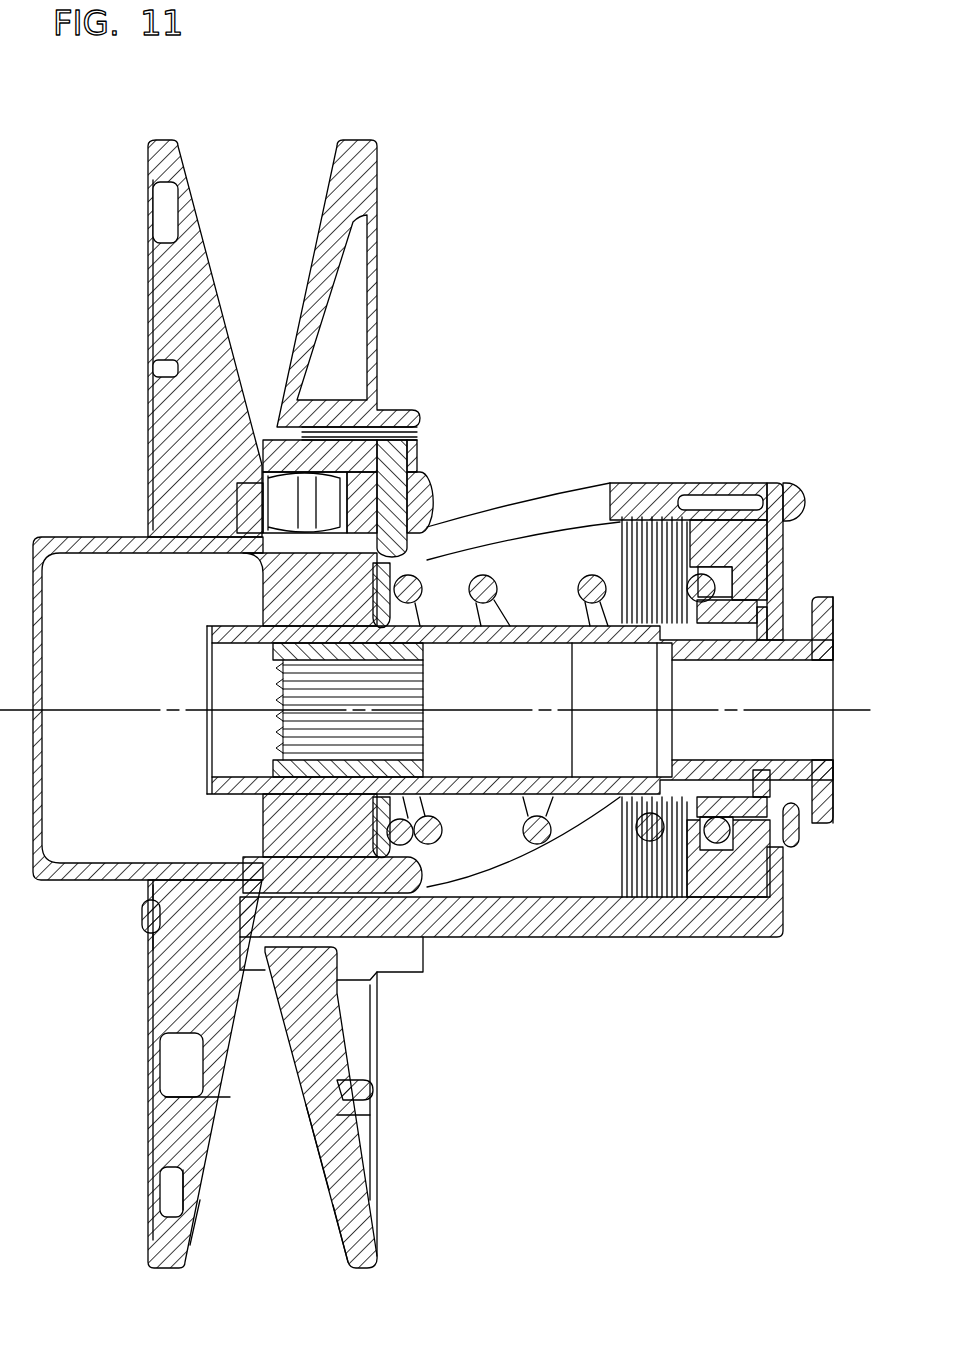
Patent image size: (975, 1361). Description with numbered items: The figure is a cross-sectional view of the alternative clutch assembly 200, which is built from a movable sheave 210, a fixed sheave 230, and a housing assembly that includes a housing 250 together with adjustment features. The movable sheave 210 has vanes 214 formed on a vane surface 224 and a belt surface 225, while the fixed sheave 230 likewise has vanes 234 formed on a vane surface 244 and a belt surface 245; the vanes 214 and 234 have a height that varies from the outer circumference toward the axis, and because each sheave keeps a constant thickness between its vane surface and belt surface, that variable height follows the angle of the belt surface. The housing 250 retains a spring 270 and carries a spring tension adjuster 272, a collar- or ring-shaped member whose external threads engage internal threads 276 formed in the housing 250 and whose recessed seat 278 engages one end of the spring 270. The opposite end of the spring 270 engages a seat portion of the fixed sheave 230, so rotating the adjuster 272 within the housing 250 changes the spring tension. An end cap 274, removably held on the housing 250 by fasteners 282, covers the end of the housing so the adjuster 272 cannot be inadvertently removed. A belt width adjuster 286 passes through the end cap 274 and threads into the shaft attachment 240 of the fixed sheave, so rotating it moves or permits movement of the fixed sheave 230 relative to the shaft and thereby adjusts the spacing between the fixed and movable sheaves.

The clutch assembly 200 is at (700, 176).
The movable sheave 210 is at (165, 152).
The vanes 214 is at (175, 1133).
The vane surface 224 is at (190, 1190).
The belt surface 225 is at (200, 1205).
The fixed sheave 230 is at (345, 177).
The vanes 234 is at (352, 1093).
The vane surface 244 is at (335, 1155).
The belt surface 245 is at (333, 1215).
The shaft attachment 240 is at (540, 626).
The housing 250 is at (678, 920).
The spring 270 is at (593, 585).
The spring tension adjuster 272 is at (717, 530).
The end cap 274 is at (775, 560).
The internal threads 276 is at (657, 540).
The seat 278 is at (735, 590).
The fasteners 282 is at (796, 493).
The belt width adjuster 286 is at (825, 625).